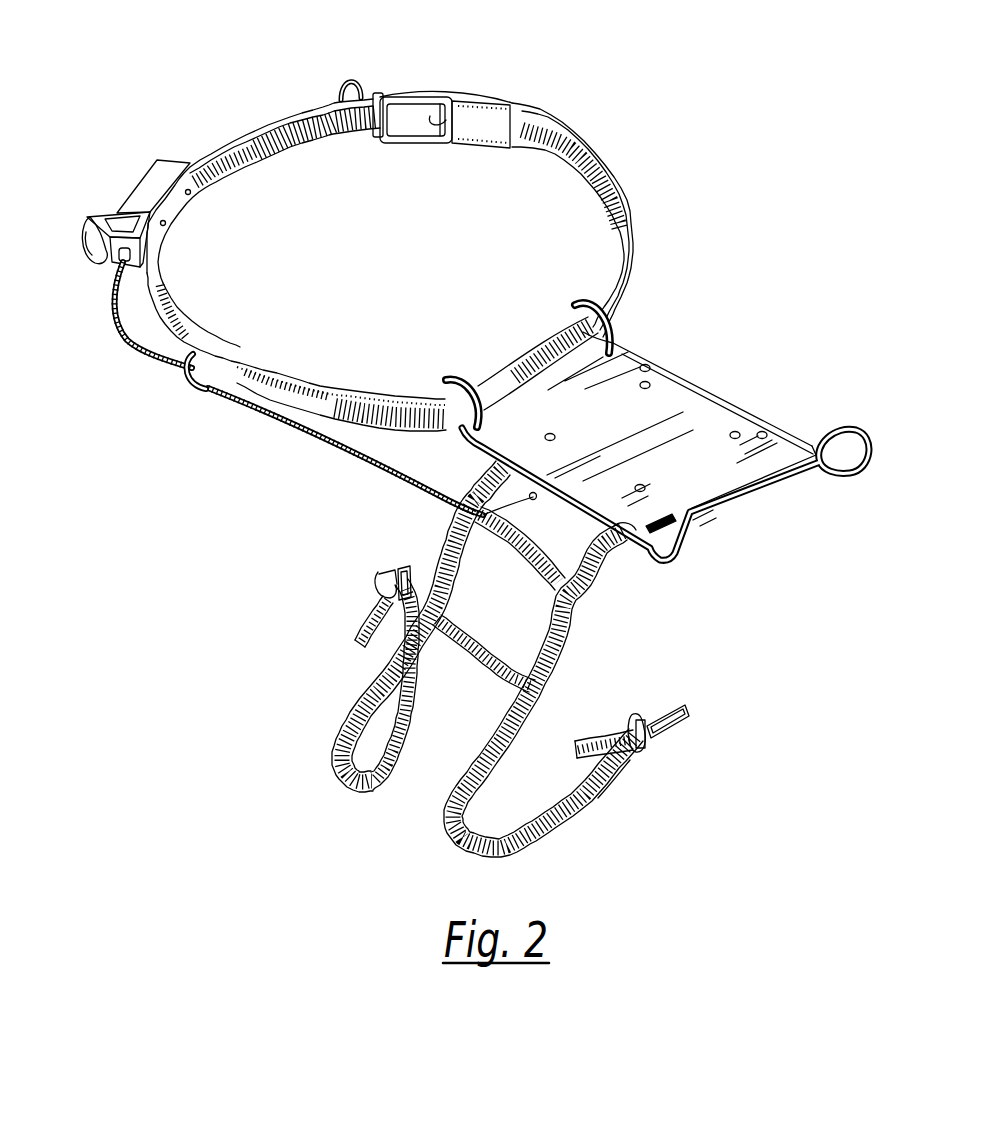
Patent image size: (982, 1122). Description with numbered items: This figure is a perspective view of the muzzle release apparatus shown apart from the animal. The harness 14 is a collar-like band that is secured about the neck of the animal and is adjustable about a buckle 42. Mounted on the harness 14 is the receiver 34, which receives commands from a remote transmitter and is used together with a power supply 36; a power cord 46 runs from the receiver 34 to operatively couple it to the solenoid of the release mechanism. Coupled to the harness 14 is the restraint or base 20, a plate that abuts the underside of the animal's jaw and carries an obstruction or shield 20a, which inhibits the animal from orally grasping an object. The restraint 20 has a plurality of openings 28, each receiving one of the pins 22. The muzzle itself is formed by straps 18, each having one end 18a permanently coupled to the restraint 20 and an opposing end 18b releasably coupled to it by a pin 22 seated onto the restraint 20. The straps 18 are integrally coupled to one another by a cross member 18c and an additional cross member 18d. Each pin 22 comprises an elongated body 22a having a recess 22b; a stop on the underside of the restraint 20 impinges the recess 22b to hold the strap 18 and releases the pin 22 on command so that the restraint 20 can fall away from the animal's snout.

The harness 14 is at (539, 88).
The buckle 42 is at (380, 93).
The receiver 34 is at (160, 160).
The power supply 36 is at (96, 217).
The power cord 46 is at (115, 322).
The restraint 20 is at (712, 412).
The obstruction or shield 20a is at (760, 490).
The openings 28 is at (646, 363).
The strap 18 is at (355, 695).
The end of strap 18a is at (632, 548).
The opposing end of strap 18b is at (620, 762).
The cross member 18c is at (474, 652).
The cross member 18d is at (518, 552).
The pin 22 is at (398, 560).
The elongated body 22a is at (664, 740).
The recess 22b is at (688, 727).